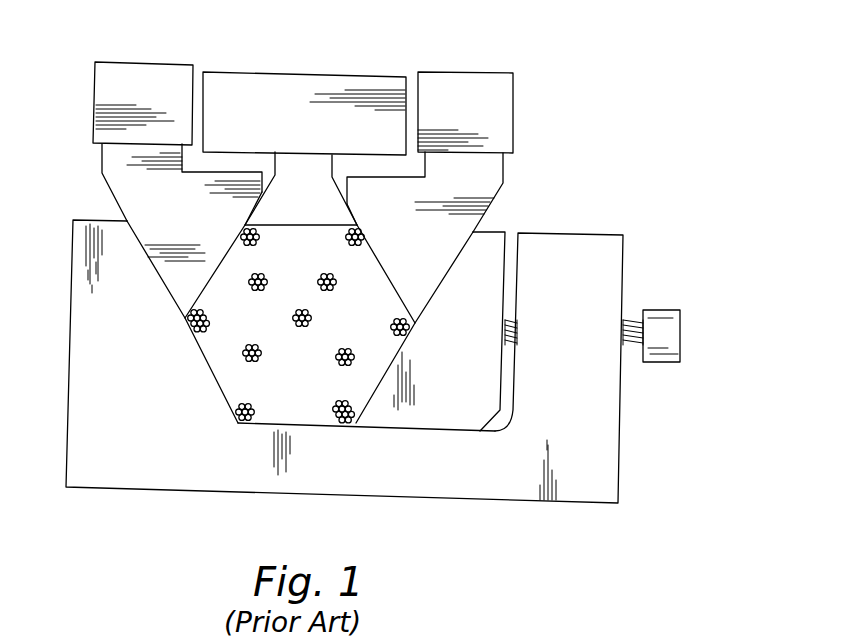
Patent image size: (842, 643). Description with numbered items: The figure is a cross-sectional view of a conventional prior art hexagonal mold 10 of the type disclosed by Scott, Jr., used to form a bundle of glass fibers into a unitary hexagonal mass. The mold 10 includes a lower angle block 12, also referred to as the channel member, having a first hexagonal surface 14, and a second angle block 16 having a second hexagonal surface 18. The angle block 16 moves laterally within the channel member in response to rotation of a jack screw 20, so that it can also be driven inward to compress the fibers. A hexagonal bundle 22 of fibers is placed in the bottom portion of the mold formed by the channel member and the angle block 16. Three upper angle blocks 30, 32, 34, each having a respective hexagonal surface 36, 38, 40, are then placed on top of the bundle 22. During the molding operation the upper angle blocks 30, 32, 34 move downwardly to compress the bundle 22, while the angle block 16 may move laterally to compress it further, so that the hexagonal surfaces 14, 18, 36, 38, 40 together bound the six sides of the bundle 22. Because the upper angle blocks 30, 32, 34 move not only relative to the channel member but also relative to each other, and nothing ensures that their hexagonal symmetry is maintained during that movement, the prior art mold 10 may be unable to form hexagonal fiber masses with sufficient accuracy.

The hexagonal mold 10 is at (615, 133).
The angle block 12 is at (600, 432).
The first hexagonal surface 14 is at (208, 358).
The angle block 16 is at (405, 413).
The second hexagonal surface 18 is at (358, 408).
The jack screw 20 is at (663, 315).
The hexagonal bundle of fibers 22 is at (306, 386).
The upper angle block 30 is at (103, 90).
The upper angle block 32 is at (282, 82).
The upper angle block 34 is at (487, 85).
The hexagonal surface 36 is at (222, 266).
The hexagonal surface 38 is at (291, 226).
The hexagonal surface 40 is at (392, 288).